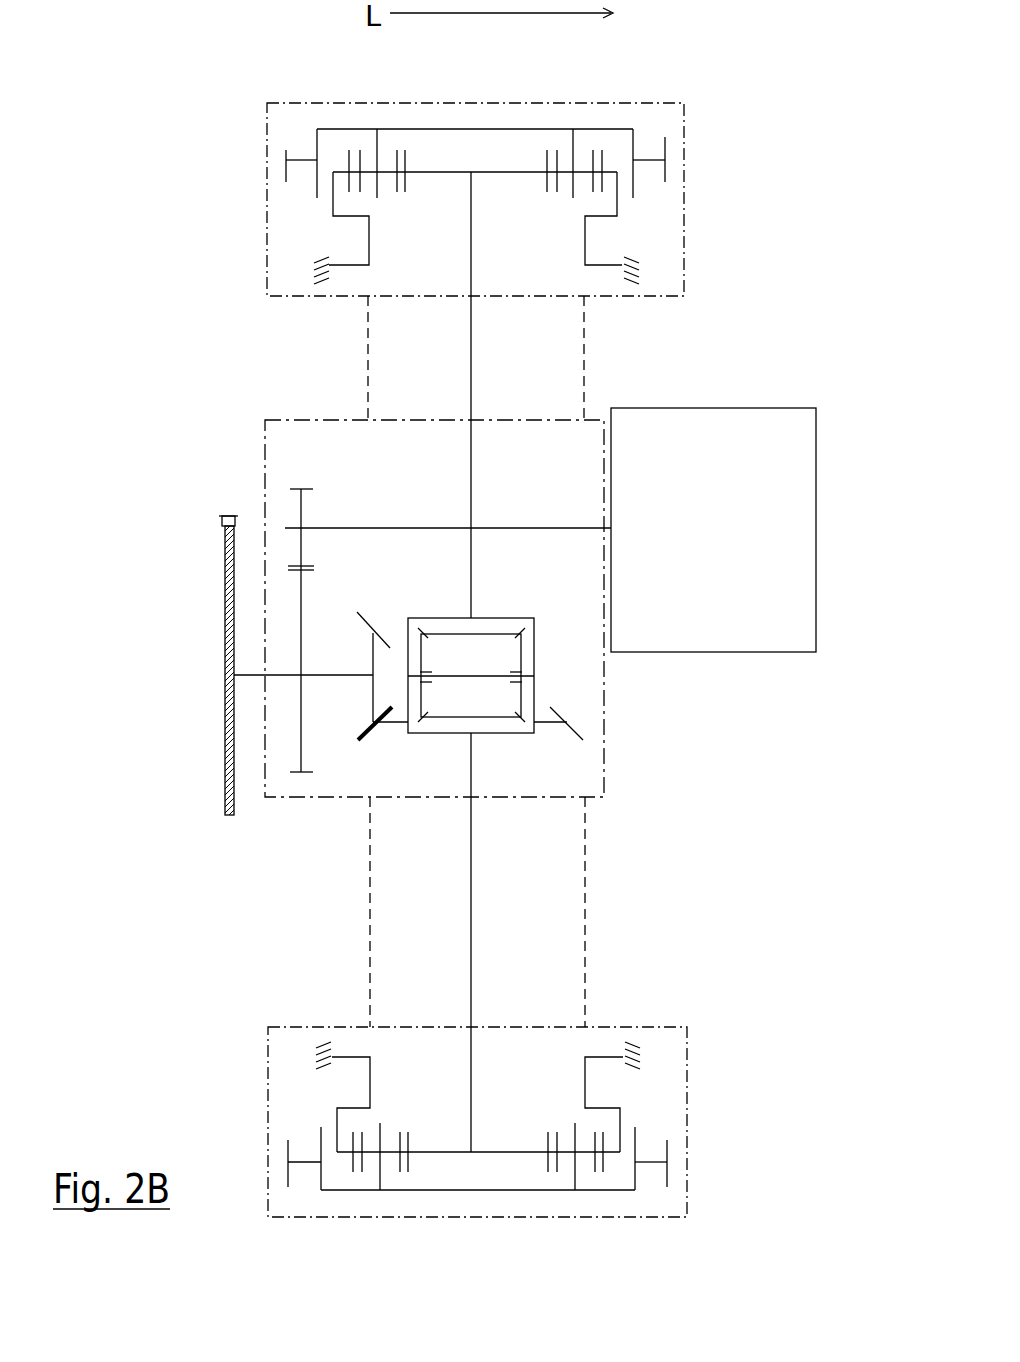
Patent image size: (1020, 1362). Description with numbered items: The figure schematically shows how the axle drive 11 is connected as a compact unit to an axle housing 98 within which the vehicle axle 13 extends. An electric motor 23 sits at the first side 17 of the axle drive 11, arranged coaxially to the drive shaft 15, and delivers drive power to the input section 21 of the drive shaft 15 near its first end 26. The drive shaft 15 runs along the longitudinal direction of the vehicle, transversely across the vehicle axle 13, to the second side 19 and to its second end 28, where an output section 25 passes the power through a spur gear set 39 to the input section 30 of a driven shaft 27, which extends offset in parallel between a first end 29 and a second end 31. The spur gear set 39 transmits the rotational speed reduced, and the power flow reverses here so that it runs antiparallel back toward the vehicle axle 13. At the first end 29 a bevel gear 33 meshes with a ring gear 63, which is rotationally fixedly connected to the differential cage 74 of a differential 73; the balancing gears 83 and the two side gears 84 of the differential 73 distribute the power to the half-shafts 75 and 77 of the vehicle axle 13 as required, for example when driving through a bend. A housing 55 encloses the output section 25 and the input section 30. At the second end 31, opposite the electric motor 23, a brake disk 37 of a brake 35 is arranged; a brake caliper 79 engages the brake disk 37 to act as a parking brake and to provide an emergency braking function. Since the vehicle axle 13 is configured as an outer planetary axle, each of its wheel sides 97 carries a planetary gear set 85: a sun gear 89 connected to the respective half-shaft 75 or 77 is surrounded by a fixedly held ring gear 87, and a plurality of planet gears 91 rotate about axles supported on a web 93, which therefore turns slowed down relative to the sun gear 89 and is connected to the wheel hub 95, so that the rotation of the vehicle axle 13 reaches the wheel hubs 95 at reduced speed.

The axle drive 11 is at (168, 363).
The vehicle axle 13 is at (472, 325).
The drive shaft 15 is at (408, 527).
The first side 17 is at (600, 403).
The second side 19 is at (268, 388).
The input section 21 is at (606, 512).
The electric motor 23 is at (701, 554).
The output section 25 is at (302, 527).
The first end 26 is at (609, 514).
The driven shaft 27 is at (335, 676).
The second end 28 is at (288, 529).
The first end 29 is at (370, 676).
The input section 30 is at (305, 676).
The second end 31 is at (234, 675).
The bevel gear 33 is at (373, 633).
The brake 35 is at (173, 552).
The brake disk 37 is at (225, 786).
The spur gear set 39 is at (285, 553).
The housing 55 is at (604, 740).
The ring gear 63 is at (377, 722).
The differential 73 is at (517, 598).
The differential cage 74 is at (442, 733).
The half-shaft 75 is at (473, 773).
The half-shaft 77 is at (471, 592).
The brake caliper 79 is at (219, 537).
The balancing gears 83 is at (425, 658).
The side gears 84 is at (486, 637).
The planetary gear set 85 is at (479, 111).
The ring gear 87 is at (604, 187).
The sun gear 89 is at (549, 165).
The planet gears 91 is at (358, 160).
The web 93 is at (622, 130).
The wheel hub 95 is at (285, 147).
The wheel sides 97 is at (685, 173).
The axle housing 98 is at (583, 348).